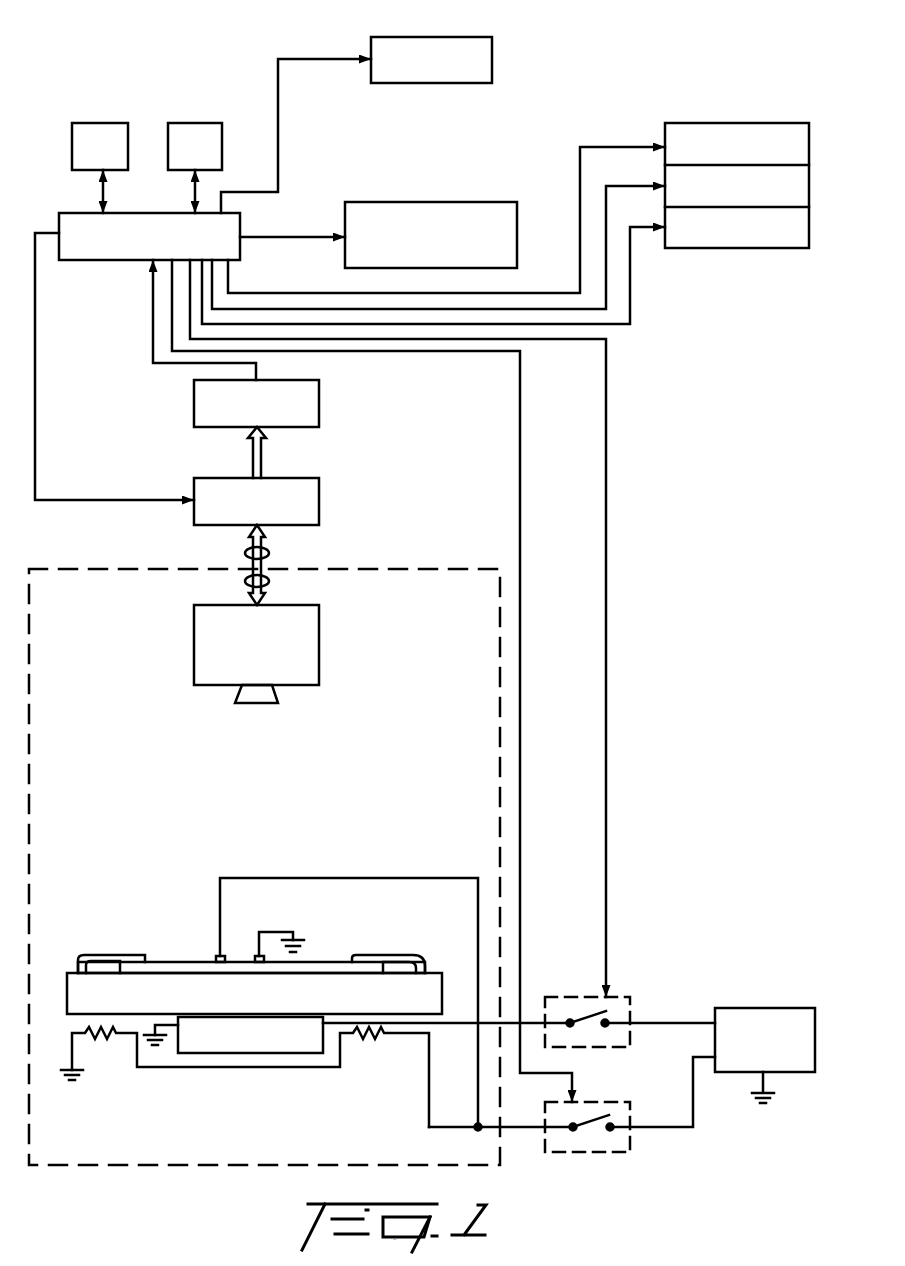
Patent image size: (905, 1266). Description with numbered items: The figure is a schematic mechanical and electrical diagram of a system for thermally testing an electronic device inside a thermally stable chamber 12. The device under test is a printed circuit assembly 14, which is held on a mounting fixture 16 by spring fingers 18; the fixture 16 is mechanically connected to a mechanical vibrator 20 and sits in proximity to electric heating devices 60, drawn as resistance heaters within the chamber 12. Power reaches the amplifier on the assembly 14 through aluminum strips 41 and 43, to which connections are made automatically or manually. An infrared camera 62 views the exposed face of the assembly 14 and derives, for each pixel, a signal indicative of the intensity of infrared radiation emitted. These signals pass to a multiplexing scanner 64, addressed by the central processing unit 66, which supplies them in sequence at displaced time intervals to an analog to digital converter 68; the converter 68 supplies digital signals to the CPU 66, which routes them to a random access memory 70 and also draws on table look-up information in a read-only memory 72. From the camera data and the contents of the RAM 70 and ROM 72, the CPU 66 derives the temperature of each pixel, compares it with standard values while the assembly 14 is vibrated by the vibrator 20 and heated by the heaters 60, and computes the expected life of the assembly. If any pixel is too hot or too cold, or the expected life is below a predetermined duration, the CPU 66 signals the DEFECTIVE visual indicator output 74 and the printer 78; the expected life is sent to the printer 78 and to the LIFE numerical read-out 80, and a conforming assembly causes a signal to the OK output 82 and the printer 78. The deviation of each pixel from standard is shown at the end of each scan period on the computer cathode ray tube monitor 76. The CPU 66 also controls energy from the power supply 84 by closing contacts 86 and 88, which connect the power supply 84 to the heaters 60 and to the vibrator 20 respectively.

The thermally stable chamber 12 is at (98, 568).
The printed circuit assembly 14 is at (328, 958).
The mounting fixture 16 is at (430, 991).
The spring fingers 18 is at (101, 952).
The mechanical vibrator 20 is at (270, 1054).
The aluminum strip 41 is at (214, 957).
The aluminum strip 43 is at (255, 957).
The electric heating device 60 is at (103, 1040).
The infrared camera 62 is at (317, 652).
The multiplexing scanner 64 is at (317, 500).
The central processing unit 66 is at (67, 216).
The analog to digital converter 68 is at (317, 407).
The random access memory 70 is at (196, 123).
The read-only memory 72 is at (103, 123).
The DEFECTIVE visual indicator output 74 is at (760, 125).
The computer cathode ray tube monitor 76 is at (418, 204).
The printer 78 is at (466, 40).
The LIFE numerical read-out 80 is at (781, 240).
The OK output 82 is at (806, 180).
The power supply 84 is at (776, 1008).
The contacts 86 is at (600, 1143).
The contacts 88 is at (572, 995).